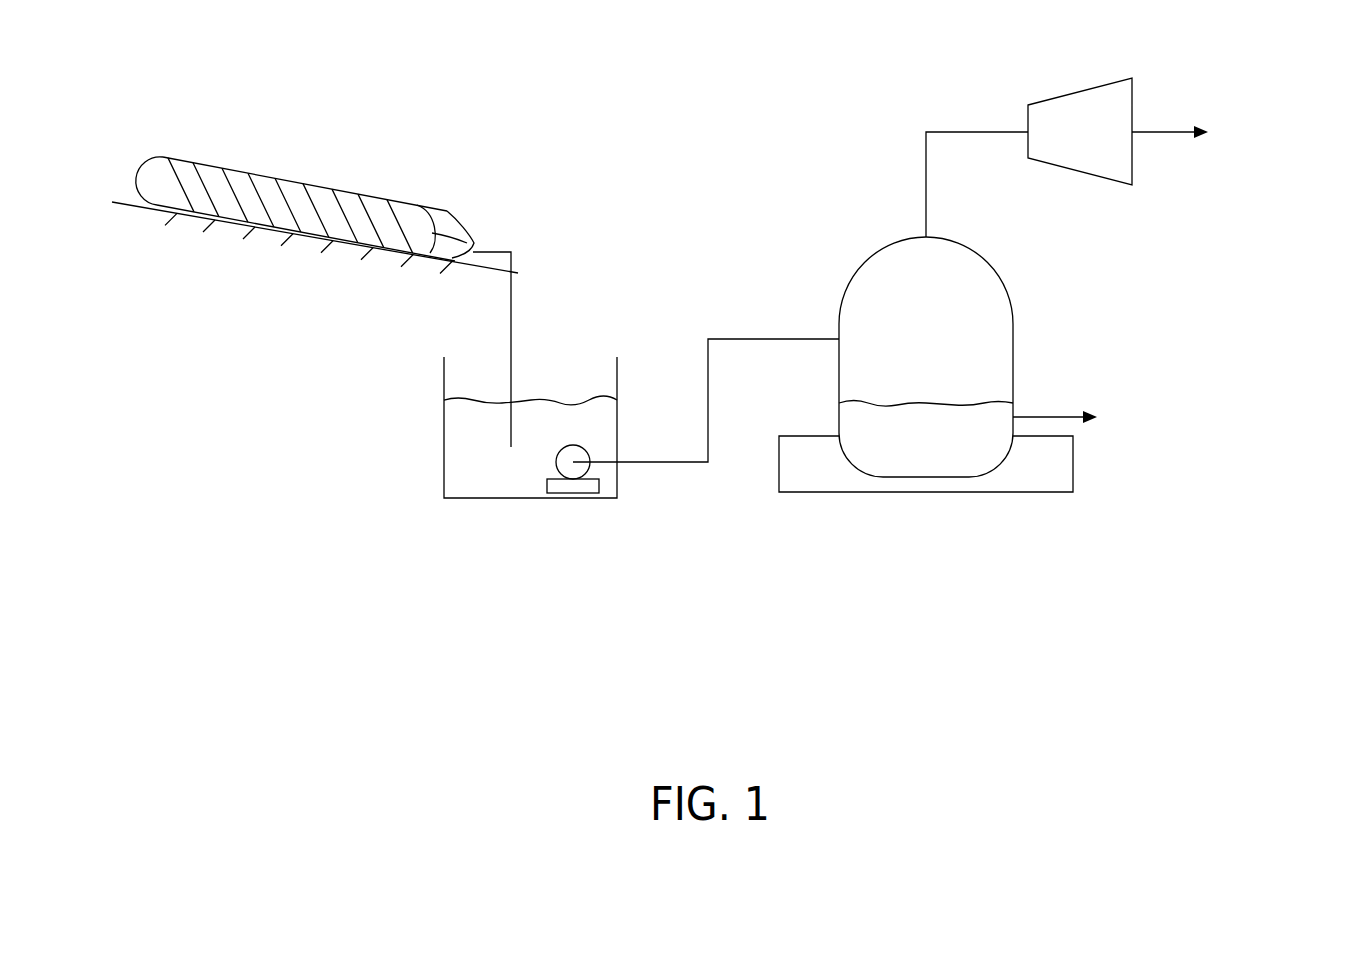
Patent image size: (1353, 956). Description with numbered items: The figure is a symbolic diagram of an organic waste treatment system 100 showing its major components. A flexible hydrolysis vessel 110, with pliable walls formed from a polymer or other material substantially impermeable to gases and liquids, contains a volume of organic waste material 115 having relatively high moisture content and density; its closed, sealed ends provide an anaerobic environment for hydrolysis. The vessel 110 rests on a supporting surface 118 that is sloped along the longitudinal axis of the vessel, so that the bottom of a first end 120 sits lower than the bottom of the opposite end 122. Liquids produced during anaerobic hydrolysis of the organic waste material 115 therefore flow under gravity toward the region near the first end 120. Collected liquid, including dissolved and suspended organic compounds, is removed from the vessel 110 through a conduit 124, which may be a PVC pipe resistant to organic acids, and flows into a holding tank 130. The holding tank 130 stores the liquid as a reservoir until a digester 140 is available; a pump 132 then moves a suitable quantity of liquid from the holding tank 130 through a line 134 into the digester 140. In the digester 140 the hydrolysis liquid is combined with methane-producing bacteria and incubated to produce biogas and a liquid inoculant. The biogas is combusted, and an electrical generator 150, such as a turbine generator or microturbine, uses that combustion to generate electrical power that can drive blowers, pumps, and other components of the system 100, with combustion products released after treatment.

The organic waste treatment system 100 is at (320, 518).
The flexible hydrolysis vessel 110 is at (203, 163).
The organic waste material 115 is at (262, 195).
The supporting surface 118 is at (270, 238).
The first end 120 is at (480, 242).
The opposite end 122 is at (140, 178).
The conduit 124 is at (512, 367).
The holding tank 130 is at (443, 463).
The pump 132 is at (572, 494).
The line 134 is at (658, 463).
The digester 140 is at (857, 265).
The electrical generator 150 is at (1060, 95).